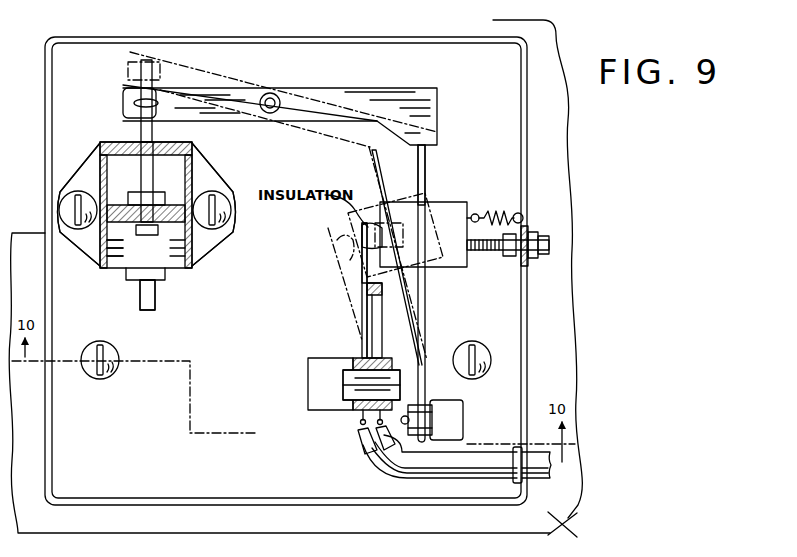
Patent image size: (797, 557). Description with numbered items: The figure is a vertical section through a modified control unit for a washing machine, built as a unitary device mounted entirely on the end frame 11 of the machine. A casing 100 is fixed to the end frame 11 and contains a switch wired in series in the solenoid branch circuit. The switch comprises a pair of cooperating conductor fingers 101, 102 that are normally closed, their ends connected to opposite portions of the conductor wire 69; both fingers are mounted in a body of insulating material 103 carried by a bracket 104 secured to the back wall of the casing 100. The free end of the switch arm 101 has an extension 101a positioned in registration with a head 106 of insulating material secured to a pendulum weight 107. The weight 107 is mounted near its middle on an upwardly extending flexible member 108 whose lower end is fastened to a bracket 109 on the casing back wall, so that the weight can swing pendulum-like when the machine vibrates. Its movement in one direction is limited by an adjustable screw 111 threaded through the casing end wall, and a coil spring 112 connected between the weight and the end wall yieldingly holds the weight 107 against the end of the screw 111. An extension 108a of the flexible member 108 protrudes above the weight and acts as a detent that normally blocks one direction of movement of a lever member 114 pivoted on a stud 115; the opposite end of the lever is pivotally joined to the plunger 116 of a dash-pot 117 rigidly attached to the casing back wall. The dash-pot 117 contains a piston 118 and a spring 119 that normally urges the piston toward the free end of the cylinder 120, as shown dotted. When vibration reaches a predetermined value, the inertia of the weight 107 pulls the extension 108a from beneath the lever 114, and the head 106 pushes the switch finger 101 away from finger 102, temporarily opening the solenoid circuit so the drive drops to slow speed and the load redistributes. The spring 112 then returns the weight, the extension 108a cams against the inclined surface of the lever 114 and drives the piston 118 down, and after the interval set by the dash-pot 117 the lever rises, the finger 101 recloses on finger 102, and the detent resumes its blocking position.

The end frame 11 is at (562, 522).
The casing 100 is at (378, 39).
The lever member 114 is at (335, 88).
The stud 115 is at (275, 95).
The plunger 116 is at (137, 133).
The cylinder 120 is at (193, 170).
The dash-pot 117 is at (192, 247).
The spring 119 is at (138, 245).
The piston 118 is at (160, 270).
The flexible member 108 is at (426, 313).
The extension 108a is at (421, 182).
The pendulum weight 107 is at (442, 204).
The head 106 is at (372, 217).
The conductor finger 102 is at (398, 318).
The coil spring 112 is at (488, 212).
The adjustable screw 111 is at (486, 252).
The conductor finger 101 is at (362, 345).
The extension 101a is at (362, 250).
The bracket 104 is at (315, 393).
The body of insulating material 103 is at (360, 414).
The conductor wire 69 is at (382, 448).
The bracket 109 is at (430, 392).